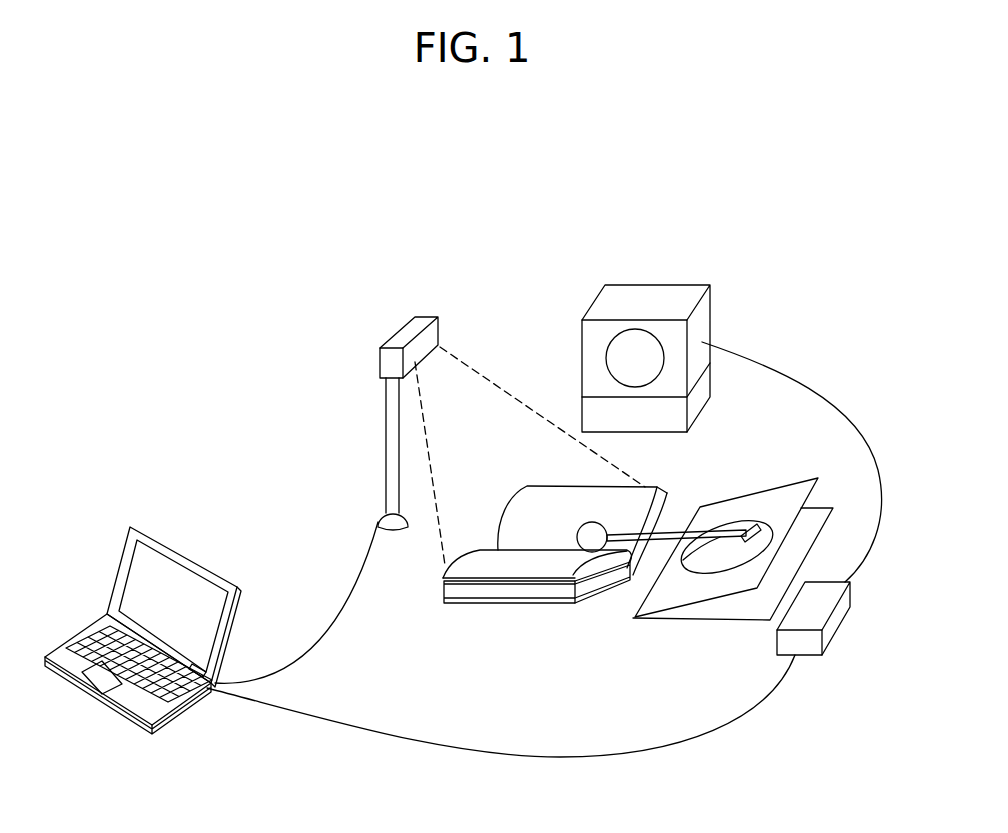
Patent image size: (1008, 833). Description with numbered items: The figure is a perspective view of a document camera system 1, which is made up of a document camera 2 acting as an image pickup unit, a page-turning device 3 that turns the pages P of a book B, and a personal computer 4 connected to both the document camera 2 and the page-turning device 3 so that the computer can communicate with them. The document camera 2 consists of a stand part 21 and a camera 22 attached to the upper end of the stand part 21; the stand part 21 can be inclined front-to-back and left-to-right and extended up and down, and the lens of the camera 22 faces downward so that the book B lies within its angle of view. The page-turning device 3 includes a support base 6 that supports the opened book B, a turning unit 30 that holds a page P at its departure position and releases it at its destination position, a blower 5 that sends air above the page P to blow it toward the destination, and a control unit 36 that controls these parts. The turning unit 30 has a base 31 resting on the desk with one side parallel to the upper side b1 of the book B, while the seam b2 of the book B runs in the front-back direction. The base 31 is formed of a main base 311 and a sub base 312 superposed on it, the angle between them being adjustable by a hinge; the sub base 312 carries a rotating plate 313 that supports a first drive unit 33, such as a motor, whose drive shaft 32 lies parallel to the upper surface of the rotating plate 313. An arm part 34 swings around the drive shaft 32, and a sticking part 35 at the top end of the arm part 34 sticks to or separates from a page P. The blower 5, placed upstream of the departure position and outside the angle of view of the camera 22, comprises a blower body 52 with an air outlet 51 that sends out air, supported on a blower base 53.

The document camera system 1 is at (506, 254).
The document camera 2 is at (386, 332).
The stand part 21 is at (385, 445).
The camera 22 is at (422, 318).
The page-turning device 3 is at (804, 380).
The turning unit 30 is at (774, 465).
The base 31 is at (701, 626).
The main base 311 is at (722, 608).
The sub base 312 is at (800, 487).
The rotating plate 313 is at (748, 558).
The drive shaft 32 is at (716, 523).
The first drive unit 33 is at (752, 527).
The arm part 34 is at (645, 542).
The sticking part 35 is at (593, 530).
The control unit 36 is at (830, 626).
The personal computer 4 is at (173, 541).
The blower 5 is at (652, 277).
The air outlet 51 is at (615, 360).
The blower body 52 is at (688, 291).
The blower base 53 is at (700, 393).
The support base 6 is at (516, 612).
The book B is at (546, 478).
The page P is at (495, 567).
The upper side b1 is at (594, 612).
The seam b2 is at (517, 550).